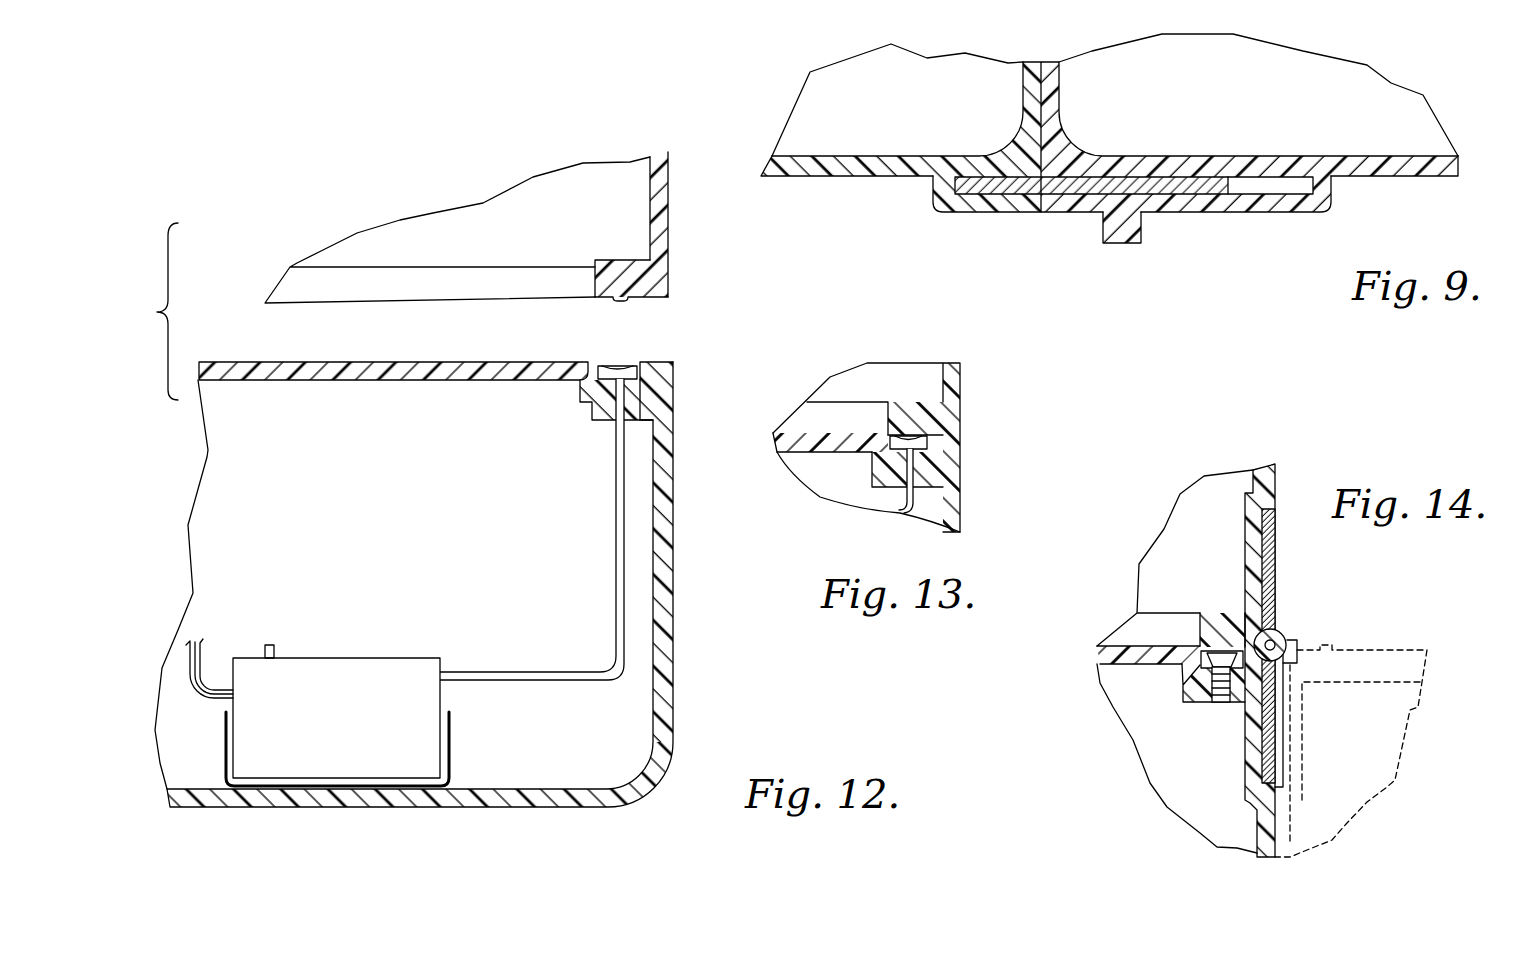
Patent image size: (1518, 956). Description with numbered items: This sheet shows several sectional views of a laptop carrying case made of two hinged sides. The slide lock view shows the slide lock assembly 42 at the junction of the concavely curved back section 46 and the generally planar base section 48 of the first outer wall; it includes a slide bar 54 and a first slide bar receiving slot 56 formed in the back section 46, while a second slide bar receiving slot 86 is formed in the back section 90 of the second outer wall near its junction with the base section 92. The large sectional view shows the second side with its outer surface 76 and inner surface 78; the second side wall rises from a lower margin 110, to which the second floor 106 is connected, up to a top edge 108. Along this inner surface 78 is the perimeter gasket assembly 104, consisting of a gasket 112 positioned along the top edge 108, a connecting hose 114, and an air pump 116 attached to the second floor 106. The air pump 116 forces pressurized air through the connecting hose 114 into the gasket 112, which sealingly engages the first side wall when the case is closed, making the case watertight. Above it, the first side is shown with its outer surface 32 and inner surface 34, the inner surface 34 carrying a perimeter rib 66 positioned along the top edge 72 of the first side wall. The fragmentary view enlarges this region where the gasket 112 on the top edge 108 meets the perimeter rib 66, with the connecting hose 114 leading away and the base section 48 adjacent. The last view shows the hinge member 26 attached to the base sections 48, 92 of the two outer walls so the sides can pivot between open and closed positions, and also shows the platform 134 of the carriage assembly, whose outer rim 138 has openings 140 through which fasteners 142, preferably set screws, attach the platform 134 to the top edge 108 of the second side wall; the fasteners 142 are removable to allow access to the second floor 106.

In FIG. 14, the hinge member 26 is at (1287, 637).
In FIG. 12, the outer surface 32 is at (498, 234).
In FIG. 12, the inner surface 34 is at (650, 197).
In FIG. 9, the slide lock assembly 42 is at (1115, 180).
In FIG. 9, the back section 46 is at (865, 177).
In FIG. 13, the base section 48 is at (958, 385).
In FIG. 14, the base section 48 is at (1277, 468).
In FIG. 9, the slide bar 54 is at (1113, 243).
In FIG. 9, the first slide bar receiving slot 56 is at (1275, 185).
In FIG. 12, the perimeter rib 66 is at (616, 300).
In FIG. 13, the perimeter rib 66 is at (907, 435).
In FIG. 14, the perimeter rib 66 is at (1224, 650).
In FIG. 12, the top edge 72 is at (666, 298).
In FIG. 12, the outer surface 76 is at (387, 797).
In FIG. 12, the inner surface 78 is at (471, 787).
In FIG. 9, the second slide bar receiving slot 86 is at (968, 180).
In FIG. 9, the back section 90 is at (1388, 178).
In FIG. 12, the base section 92 is at (460, 604).
In FIG. 14, the base section 92 is at (1275, 815).
In FIG. 12, the perimeter gasket assembly 104 is at (454, 587).
In FIG. 12, the second floor 106 is at (546, 788).
In FIG. 12, the top edge 108 is at (672, 360).
In FIG. 12, the lower margin 110 is at (649, 758).
In FIG. 12, the gasket 112 is at (608, 366).
In FIG. 13, the gasket 112 is at (923, 445).
In FIG. 12, the connecting hose 114 is at (616, 523).
In FIG. 13, the connecting hose 114 is at (898, 507).
In FIG. 12, the air pump 116 is at (315, 667).
In FIG. 12, the platform 134 is at (356, 376).
In FIG. 13, the platform 134 is at (792, 450).
In FIG. 14, the platform 134 is at (1117, 665).
In FIG. 12, the outer rim 138 is at (596, 408).
In FIG. 14, the openings 140 is at (1212, 705).
In FIG. 14, the fasteners 142 is at (1223, 700).